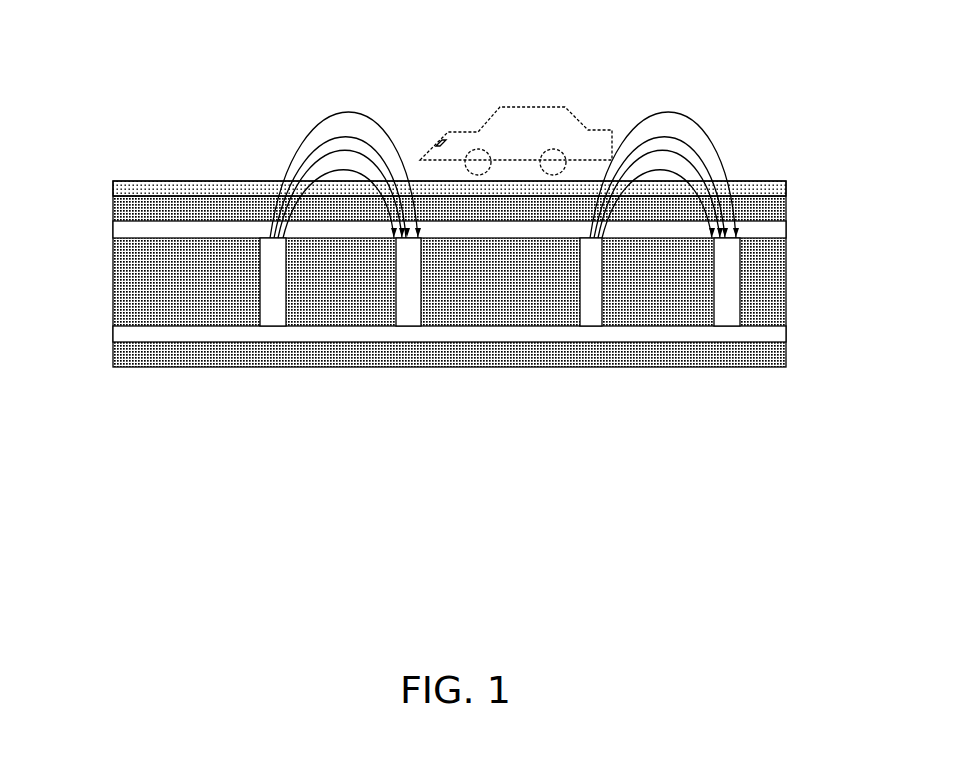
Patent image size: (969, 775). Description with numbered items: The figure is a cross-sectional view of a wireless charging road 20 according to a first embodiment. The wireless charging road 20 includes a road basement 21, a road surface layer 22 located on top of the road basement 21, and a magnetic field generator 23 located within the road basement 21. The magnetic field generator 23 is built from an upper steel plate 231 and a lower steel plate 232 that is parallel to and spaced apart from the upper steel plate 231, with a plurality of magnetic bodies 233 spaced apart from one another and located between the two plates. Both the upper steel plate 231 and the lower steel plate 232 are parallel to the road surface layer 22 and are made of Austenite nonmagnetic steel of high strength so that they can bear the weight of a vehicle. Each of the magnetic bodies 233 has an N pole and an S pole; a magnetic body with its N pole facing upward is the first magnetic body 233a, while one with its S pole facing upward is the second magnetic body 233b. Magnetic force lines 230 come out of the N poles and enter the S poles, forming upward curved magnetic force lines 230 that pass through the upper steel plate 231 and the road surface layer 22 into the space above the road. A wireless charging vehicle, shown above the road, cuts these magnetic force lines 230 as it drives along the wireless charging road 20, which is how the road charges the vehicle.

The wireless charging road 20 is at (440, 62).
The road basement 21 is at (135, 285).
The road surface layer 22 is at (136, 188).
The magnetic field generator 23 is at (512, 318).
The magnetic force lines 230 is at (697, 124).
The upper steel plate 231 is at (775, 232).
The lower steel plate 232 is at (772, 336).
The magnetic bodies 233 is at (494, 327).
The first magnetic body 233a is at (276, 283).
The second magnetic body 233b is at (410, 281).